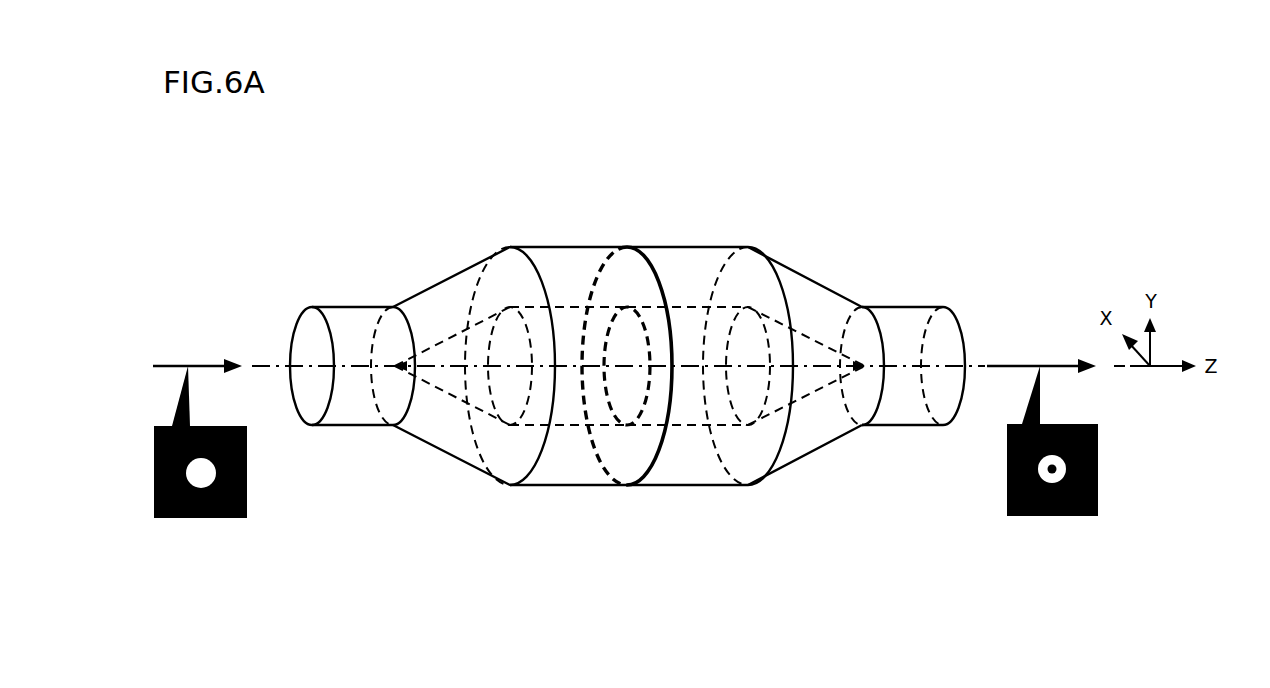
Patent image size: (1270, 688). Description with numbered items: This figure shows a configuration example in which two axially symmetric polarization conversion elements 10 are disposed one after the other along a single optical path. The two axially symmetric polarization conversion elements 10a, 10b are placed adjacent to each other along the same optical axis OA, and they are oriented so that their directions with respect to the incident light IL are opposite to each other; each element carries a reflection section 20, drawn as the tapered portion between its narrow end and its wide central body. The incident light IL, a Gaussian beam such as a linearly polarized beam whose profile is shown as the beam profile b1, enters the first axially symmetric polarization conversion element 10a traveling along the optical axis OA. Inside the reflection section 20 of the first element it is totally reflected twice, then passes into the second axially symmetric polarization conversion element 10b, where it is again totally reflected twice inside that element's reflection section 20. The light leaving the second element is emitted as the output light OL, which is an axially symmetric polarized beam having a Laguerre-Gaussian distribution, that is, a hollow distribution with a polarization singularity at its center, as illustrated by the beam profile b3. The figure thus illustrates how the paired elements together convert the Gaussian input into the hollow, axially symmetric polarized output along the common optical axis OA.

The axially symmetric polarization conversion element 10 is at (626, 329).
The axially symmetric polarization conversion element 10a is at (287, 217).
The axially symmetric polarization conversion element 10b is at (630, 217).
The reflection section 20 is at (624, 353).
The incident light IL is at (188, 362).
The output light OL is at (1040, 362).
The optical axis OA is at (261, 360).
The Gaussian beam b1 is at (211, 519).
The axially symmetric polarized beam having a Laguerre-Gaussian distribution b3 is at (1062, 517).